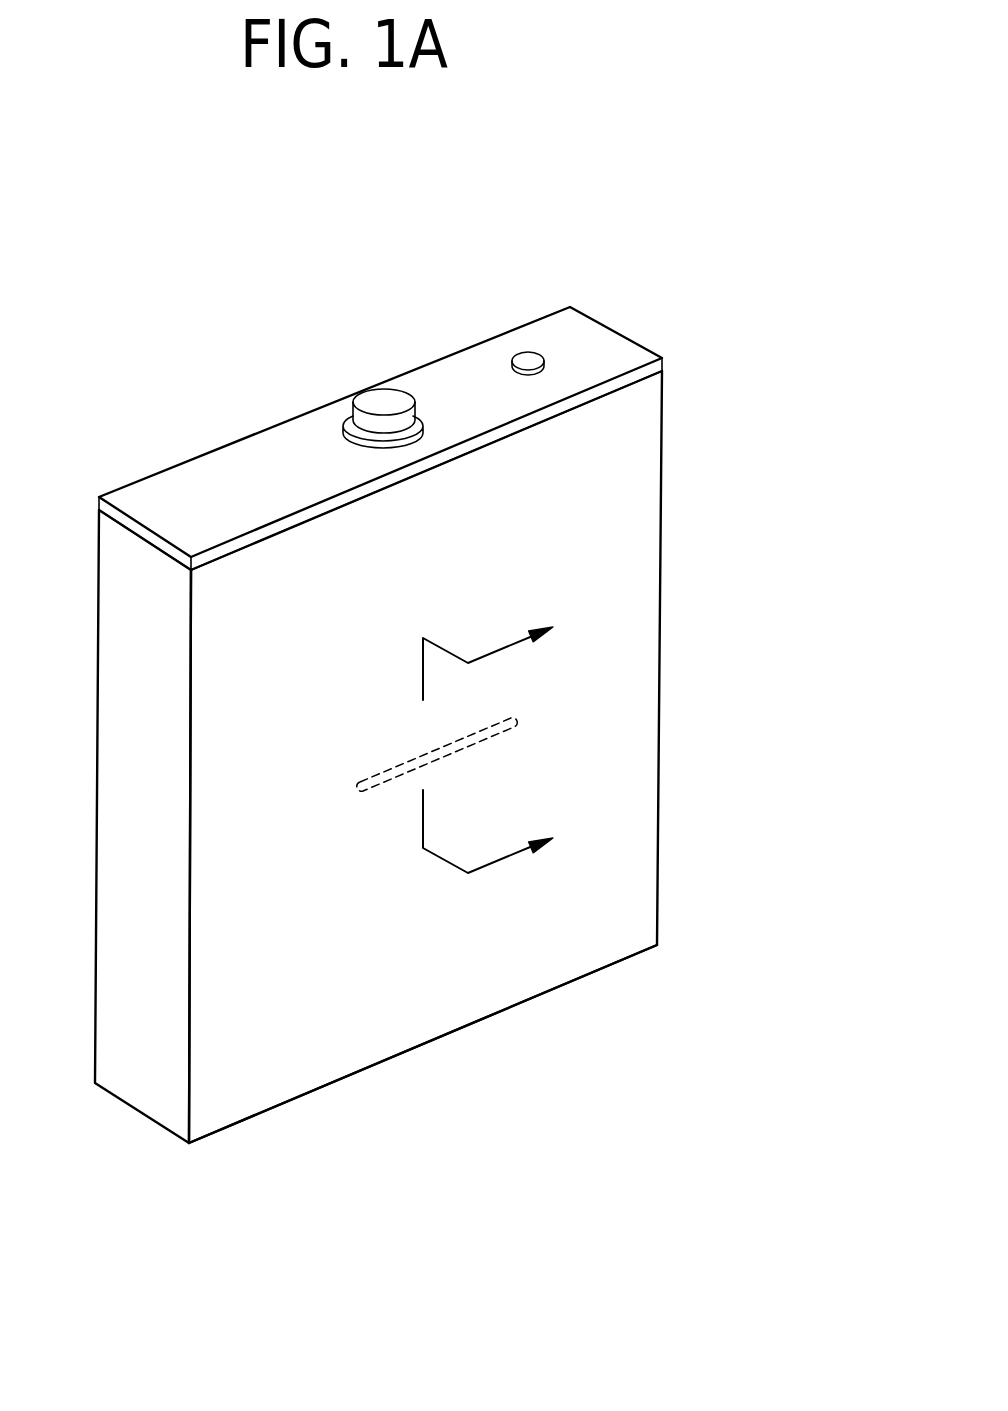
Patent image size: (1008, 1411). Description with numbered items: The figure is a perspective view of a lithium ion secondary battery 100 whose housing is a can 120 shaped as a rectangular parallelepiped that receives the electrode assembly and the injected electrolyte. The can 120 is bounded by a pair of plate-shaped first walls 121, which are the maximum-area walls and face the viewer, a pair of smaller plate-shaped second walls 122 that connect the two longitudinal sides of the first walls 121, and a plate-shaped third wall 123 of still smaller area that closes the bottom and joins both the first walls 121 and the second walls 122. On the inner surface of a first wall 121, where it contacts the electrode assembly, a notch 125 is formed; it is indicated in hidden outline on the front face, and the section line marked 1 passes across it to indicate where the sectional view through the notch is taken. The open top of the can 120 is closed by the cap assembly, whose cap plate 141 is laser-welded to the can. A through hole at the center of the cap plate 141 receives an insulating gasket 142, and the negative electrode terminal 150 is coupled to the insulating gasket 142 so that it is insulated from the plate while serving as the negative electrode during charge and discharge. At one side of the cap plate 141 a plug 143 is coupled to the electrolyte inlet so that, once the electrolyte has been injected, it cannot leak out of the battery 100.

The lithium ion secondary battery 100 is at (740, 300).
The can 120 is at (378, 865).
The first wall 121 is at (305, 1053).
The second wall 122 is at (153, 1080).
The third wall 123 is at (242, 1127).
The notch 125 is at (462, 753).
The cap plate 141 is at (200, 478).
The insulating gasket 142 is at (343, 443).
The plug 143 is at (525, 362).
The negative electrode terminal 150 is at (380, 397).
The section line 1 is at (510, 732).